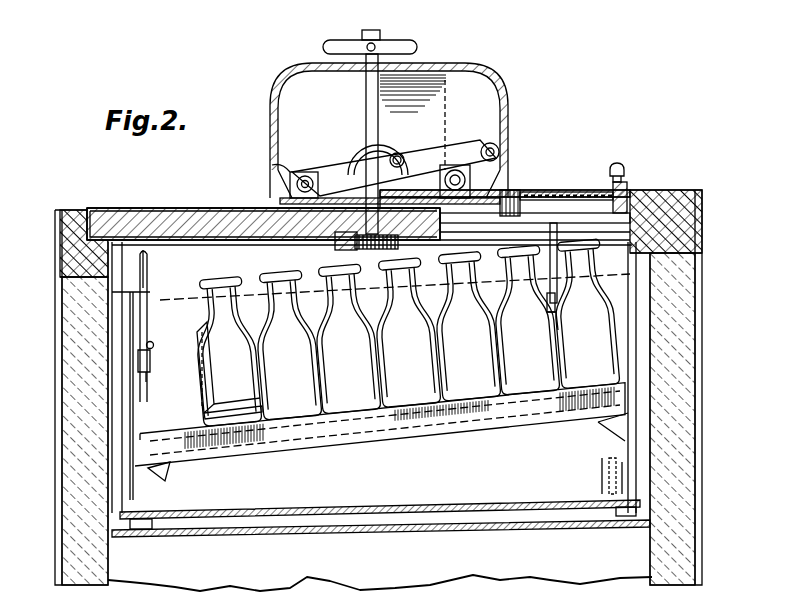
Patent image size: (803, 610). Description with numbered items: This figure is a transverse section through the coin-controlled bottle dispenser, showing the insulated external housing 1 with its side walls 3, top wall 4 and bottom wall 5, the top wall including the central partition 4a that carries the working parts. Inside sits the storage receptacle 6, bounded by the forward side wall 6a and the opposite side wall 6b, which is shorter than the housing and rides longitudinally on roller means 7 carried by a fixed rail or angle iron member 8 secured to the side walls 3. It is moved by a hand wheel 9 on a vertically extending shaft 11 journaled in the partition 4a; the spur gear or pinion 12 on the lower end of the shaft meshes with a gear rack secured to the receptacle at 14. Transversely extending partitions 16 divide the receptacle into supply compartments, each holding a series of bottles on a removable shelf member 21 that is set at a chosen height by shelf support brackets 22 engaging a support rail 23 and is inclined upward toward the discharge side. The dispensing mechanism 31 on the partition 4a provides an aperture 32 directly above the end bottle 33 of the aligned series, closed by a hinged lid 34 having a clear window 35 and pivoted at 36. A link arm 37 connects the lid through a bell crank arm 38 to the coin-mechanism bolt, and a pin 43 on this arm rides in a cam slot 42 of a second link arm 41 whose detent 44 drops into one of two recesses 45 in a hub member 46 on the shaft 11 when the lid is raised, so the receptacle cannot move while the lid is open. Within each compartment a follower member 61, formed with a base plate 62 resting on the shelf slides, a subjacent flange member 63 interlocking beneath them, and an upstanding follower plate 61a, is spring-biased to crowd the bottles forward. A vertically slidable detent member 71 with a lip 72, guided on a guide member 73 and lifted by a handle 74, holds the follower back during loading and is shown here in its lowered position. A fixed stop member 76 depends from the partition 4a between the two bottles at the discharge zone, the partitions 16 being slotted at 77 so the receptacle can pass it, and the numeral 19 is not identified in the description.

The external housing 1 is at (714, 211).
The side walls 3 is at (58, 332).
The top wall 4 is at (132, 200).
The central partition 4a is at (165, 222).
The bottom wall 5 is at (163, 245).
The storage receptacle 6 is at (40, 437).
The side wall 6a is at (610, 318).
The side wall 6b is at (135, 404).
The roller means 7 is at (612, 479).
The fixed rail or angle iron member 8 is at (626, 520).
The hand wheel 9 is at (412, 44).
The vertically extending shaft 11 is at (366, 98).
The spur gear or pinion 12 is at (398, 244).
The gear rack securing location 14 is at (326, 282).
The transversely extending partitions 16 is at (250, 280).
The bearing block 19 is at (335, 249).
The removable shelf member 21 is at (378, 438).
The shelf support brackets 22 is at (164, 470).
The support rail 23 is at (128, 422).
The dispensing mechanism 31 is at (476, 57).
The aperture 32 is at (570, 213).
The bottle 33 is at (592, 272).
The hinged lid 34 is at (540, 192).
The clear glass or composition window 35 is at (612, 182).
The pivot 36 is at (514, 190).
The link arm 37 is at (462, 150).
The bell crank arm 38 is at (492, 140).
The second link arm 41 is at (355, 150).
The cam slot 42 is at (398, 155).
The pin 43 is at (404, 158).
The detent 44 is at (345, 170).
The recesses 45 is at (275, 198).
The hub member 46 is at (450, 181).
The follower member 61 is at (213, 359).
The follower plate 61a is at (212, 384).
The base plate 62 is at (256, 408).
The subjacent flange member 63 is at (250, 438).
The detent member 71 is at (158, 355).
The lip 72 is at (150, 370).
The guide member 73 is at (142, 322).
The handle 74 is at (141, 272).
The fixed stop member 76 is at (547, 302).
The slots 77 is at (550, 322).